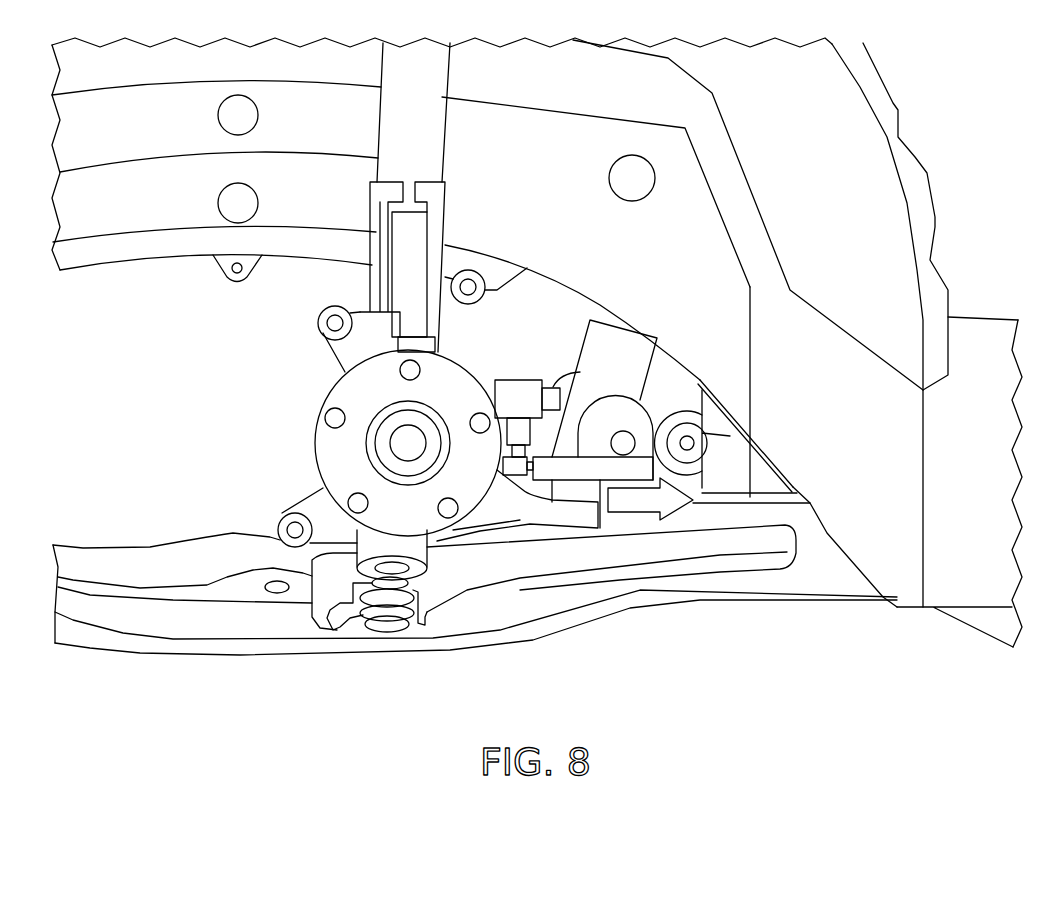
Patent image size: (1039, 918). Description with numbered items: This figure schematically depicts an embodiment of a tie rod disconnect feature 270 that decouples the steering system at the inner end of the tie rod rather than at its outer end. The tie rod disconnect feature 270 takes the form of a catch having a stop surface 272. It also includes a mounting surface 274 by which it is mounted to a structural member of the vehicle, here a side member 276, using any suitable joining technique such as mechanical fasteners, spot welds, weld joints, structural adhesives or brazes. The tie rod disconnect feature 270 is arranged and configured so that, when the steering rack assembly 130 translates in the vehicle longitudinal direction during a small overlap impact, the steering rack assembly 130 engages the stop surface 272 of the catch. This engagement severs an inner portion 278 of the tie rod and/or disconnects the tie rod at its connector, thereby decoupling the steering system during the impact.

The steering rack assembly 130 is at (613, 403).
The tie rod disconnect feature 270 is at (753, 465).
The stop surface 272 is at (700, 437).
The mounting surface 274 is at (797, 482).
The side member 276 is at (710, 232).
The inner portion of the tie rod 278 is at (687, 450).